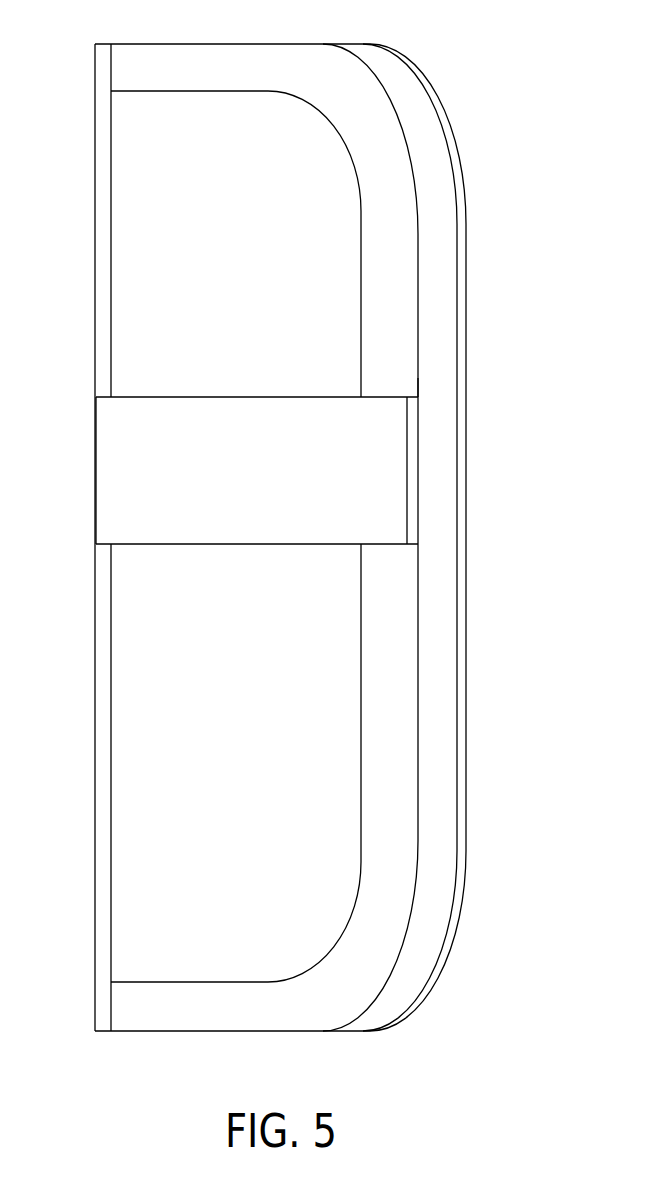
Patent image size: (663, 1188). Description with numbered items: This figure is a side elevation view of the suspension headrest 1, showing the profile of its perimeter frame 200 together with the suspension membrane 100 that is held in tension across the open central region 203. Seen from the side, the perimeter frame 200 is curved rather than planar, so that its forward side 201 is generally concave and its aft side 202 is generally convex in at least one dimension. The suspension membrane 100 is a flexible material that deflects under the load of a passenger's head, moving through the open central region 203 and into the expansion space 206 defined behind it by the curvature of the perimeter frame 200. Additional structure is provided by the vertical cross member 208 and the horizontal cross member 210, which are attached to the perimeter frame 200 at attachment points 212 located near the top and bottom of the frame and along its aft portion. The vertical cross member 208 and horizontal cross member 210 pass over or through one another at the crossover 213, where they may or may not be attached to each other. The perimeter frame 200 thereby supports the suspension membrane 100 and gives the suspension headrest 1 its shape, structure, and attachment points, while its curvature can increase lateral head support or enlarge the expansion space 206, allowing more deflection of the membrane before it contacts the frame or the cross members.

The suspension headrest 1 is at (548, 112).
The suspension membrane 100 is at (476, 841).
The perimeter frame 200 is at (418, 145).
The forward side 201 is at (468, 879).
The aft side 202 is at (308, 1008).
The open central region 203 is at (201, 104).
The expansion space 206 is at (150, 825).
The vertical cross member 208 is at (103, 197).
The horizontal cross member 210 is at (390, 485).
The attachment points 212 is at (110, 70).
The crossover 213 is at (96, 470).